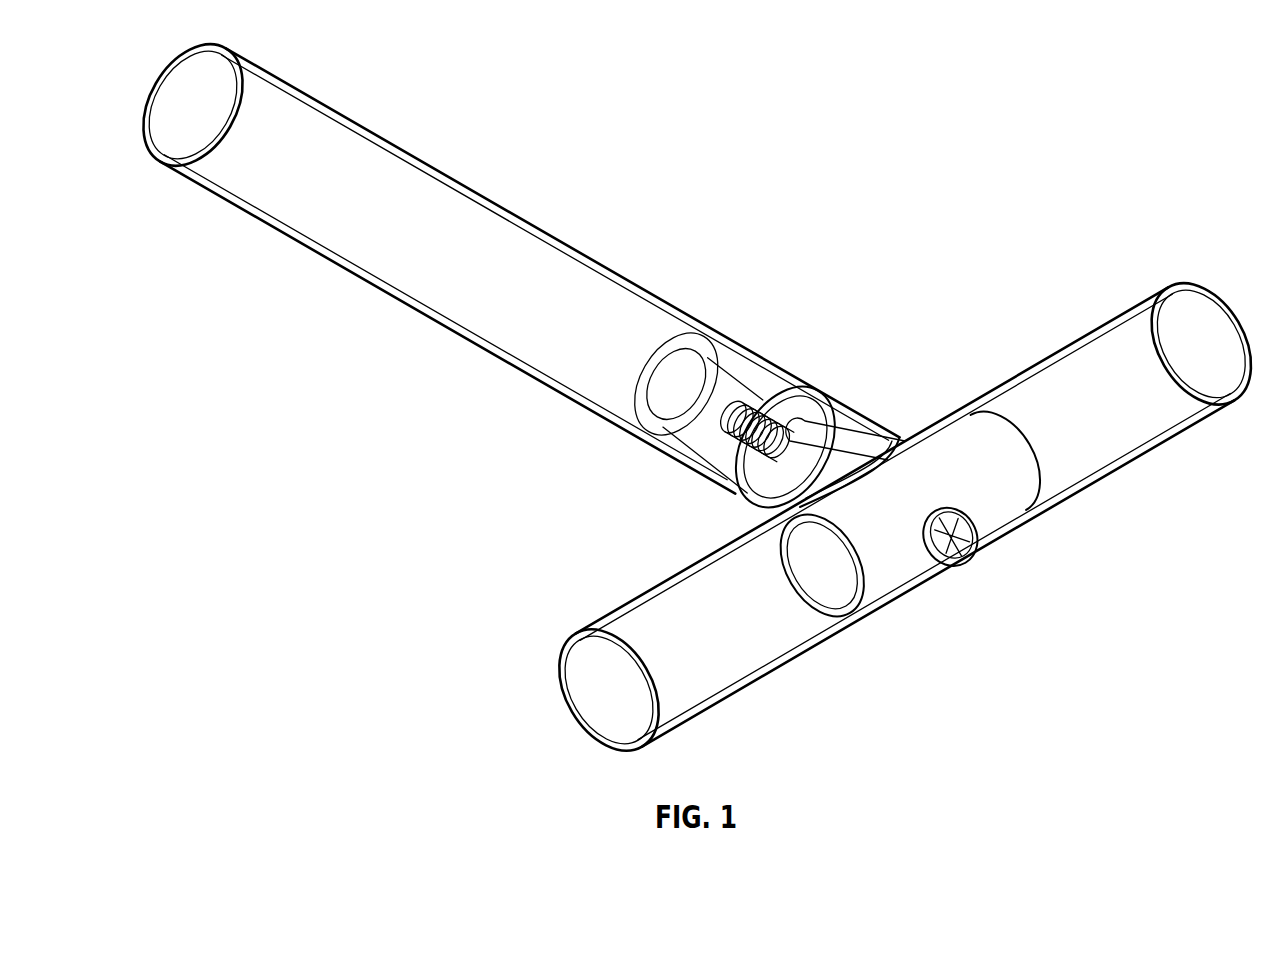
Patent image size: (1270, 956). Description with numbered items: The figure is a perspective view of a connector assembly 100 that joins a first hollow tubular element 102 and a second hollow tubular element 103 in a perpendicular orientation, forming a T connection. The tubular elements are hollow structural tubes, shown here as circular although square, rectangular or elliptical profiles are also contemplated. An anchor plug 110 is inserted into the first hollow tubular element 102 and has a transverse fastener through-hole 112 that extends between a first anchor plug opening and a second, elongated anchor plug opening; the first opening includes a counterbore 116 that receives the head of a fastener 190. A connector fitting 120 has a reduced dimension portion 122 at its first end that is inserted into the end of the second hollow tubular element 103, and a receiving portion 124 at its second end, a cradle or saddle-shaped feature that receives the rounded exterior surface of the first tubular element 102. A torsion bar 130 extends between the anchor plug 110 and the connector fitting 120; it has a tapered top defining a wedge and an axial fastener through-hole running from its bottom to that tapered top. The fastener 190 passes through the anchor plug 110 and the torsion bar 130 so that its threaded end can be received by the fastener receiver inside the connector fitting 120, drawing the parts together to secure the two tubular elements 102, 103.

The connector assembly 100 is at (1072, 176).
The first hollow tubular element 102 is at (1165, 417).
The second hollow tubular element 103 is at (387, 163).
The anchor plug 110 is at (988, 450).
The transverse fastener through-hole 112 is at (975, 580).
The counterbore 116 is at (975, 520).
The connector fitting 120 is at (648, 472).
The reduced dimension portion 122 is at (733, 363).
The receiving portion 124 is at (860, 410).
The torsion bar 130 is at (780, 481).
The fastener 190 is at (947, 557).